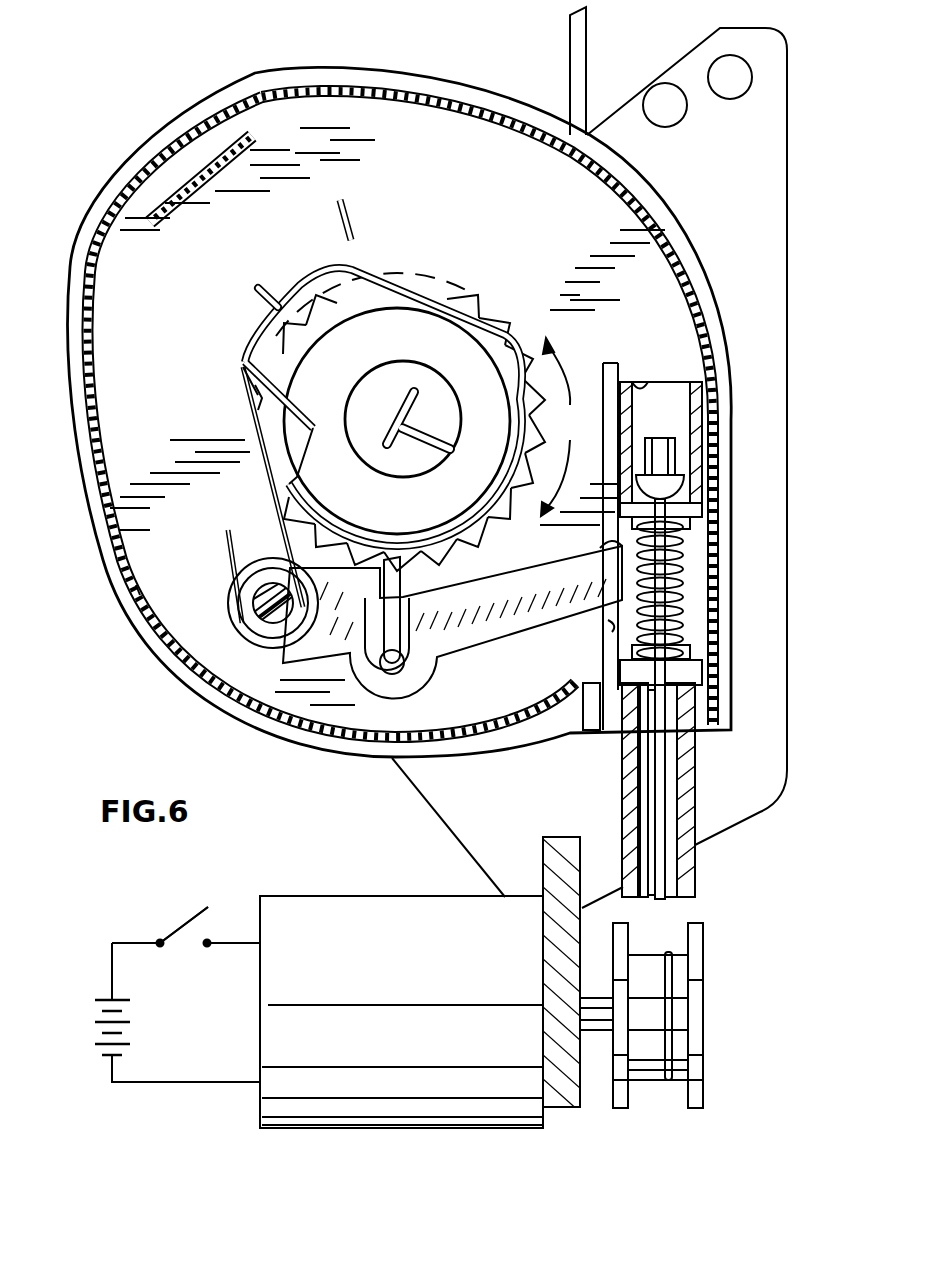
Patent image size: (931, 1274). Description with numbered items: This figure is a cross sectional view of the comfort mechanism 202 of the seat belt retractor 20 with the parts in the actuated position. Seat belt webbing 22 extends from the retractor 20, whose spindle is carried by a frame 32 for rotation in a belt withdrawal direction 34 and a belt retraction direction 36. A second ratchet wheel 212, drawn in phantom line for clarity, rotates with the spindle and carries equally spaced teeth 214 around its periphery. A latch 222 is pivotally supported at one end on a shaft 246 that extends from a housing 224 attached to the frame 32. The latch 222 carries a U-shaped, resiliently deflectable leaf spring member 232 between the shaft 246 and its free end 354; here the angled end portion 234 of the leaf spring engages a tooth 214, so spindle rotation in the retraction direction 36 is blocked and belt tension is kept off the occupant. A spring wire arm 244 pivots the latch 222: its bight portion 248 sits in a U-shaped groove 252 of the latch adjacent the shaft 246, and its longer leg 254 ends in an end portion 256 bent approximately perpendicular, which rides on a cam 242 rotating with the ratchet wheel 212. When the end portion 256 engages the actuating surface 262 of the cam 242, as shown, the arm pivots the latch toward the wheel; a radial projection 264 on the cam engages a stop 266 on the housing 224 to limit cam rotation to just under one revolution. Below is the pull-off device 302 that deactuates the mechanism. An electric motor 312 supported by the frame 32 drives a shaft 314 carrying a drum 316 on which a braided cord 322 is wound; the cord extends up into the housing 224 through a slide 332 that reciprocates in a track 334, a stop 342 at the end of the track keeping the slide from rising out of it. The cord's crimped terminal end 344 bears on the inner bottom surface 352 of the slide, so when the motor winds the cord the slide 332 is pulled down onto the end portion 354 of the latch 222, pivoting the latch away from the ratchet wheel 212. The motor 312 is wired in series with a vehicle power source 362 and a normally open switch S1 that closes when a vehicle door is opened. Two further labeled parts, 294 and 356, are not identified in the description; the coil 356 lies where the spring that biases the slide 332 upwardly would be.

The seat belt retractor 20 is at (498, 62).
The seat belt webbing 22 is at (578, 77).
The frame 32 is at (465, 800).
The seat belt withdrawal direction 34 is at (563, 372).
The seat belt retraction direction 36 is at (558, 484).
The comfort mechanism 202 is at (172, 512).
The second ratchet wheel 212 is at (437, 256).
The teeth 214 is at (498, 290).
The latch 222 is at (492, 598).
The housing 224 is at (140, 590).
The leaf spring member 232 is at (418, 622).
The angled end portion 234 is at (393, 558).
The cam 242 is at (352, 252).
The spring wire arm 244 is at (218, 546).
The shaft 246 is at (262, 624).
The bight portion 248 is at (276, 626).
The U-shaped groove 252 is at (245, 556).
The longer leg 254 is at (262, 450).
The end portion 256 is at (243, 365).
The actuating surface 262 is at (256, 386).
The projection 264 is at (258, 288).
The stop 266 is at (335, 212).
The carrier plate 294 is at (345, 292).
The pull-off device 302 is at (708, 803).
The electric motor 312 is at (402, 966).
The shaft 314 is at (600, 1035).
The drum 316 is at (695, 1040).
The braided cord 322 is at (658, 873).
The slide 332 is at (697, 395).
The track 334 is at (612, 626).
The stop 342 is at (652, 382).
The terminal end 344 is at (663, 452).
The inner bottom surface 352 is at (688, 488).
The end portion of the latch 354 is at (600, 548).
The return spring 356 is at (680, 590).
The power source 362 is at (97, 975).
The normally opened switch S1 is at (186, 955).